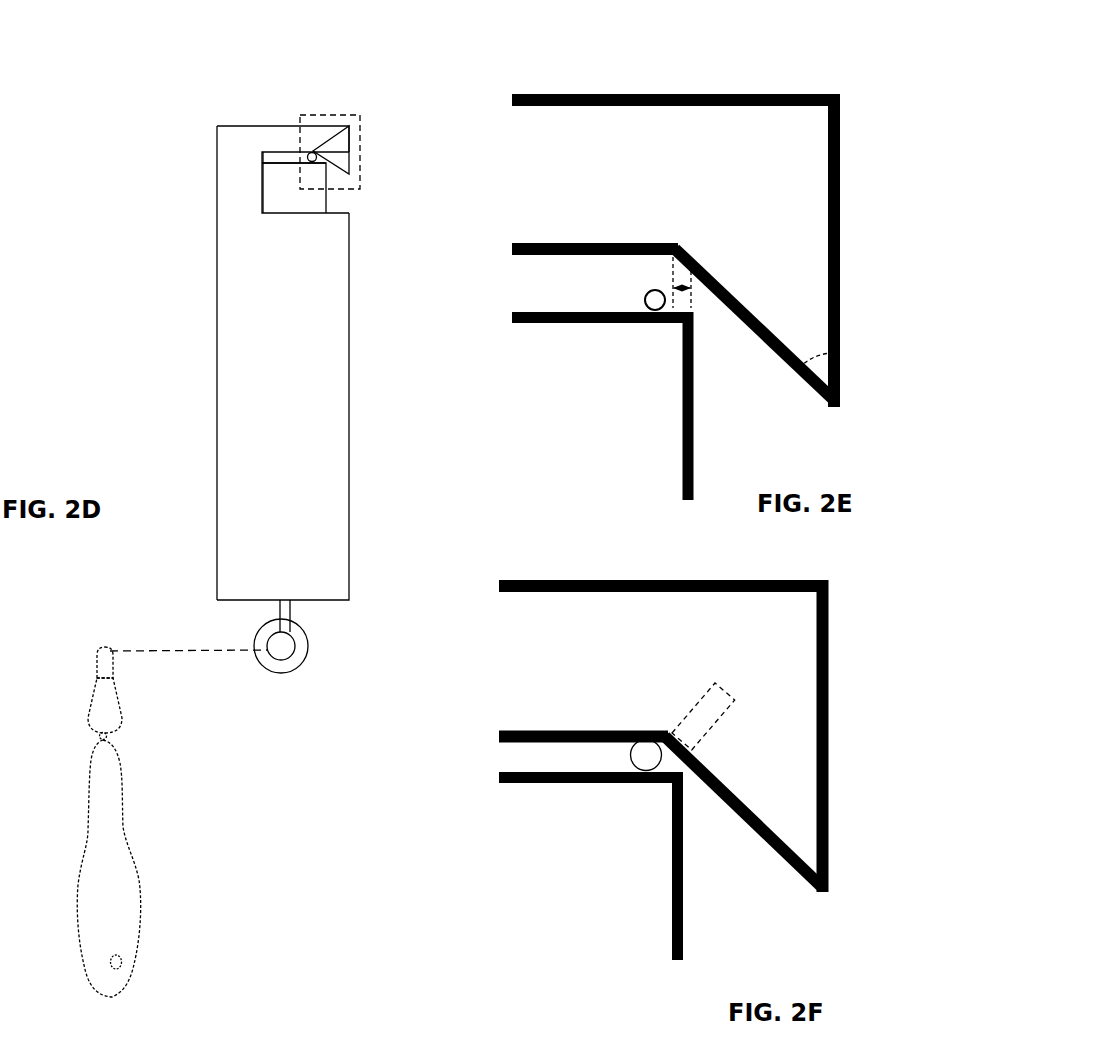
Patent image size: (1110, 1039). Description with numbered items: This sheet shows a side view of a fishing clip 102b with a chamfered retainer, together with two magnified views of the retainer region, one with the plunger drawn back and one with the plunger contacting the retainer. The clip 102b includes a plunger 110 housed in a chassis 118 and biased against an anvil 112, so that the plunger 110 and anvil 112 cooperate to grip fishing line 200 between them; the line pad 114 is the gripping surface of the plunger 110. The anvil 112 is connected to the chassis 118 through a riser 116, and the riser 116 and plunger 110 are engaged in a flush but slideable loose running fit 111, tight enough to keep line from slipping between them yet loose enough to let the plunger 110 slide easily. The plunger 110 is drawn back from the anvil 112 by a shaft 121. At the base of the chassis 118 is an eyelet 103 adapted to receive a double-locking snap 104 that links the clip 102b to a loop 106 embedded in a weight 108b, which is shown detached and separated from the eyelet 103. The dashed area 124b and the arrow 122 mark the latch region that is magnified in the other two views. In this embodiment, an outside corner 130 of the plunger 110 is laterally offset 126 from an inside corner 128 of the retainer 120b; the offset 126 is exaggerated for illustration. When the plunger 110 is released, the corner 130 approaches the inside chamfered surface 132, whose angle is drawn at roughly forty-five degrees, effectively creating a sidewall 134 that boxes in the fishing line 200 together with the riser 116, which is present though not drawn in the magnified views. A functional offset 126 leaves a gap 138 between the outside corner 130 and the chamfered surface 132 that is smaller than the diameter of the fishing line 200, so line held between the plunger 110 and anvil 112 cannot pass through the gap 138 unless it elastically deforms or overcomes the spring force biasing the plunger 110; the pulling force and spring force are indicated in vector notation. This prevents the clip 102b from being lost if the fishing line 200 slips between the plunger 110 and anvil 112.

In FIG. 2D, the clip 102b is at (182, 408).
In FIG. 2D, the eyelet 103 is at (298, 625).
In FIG. 2D, the double-locking snap 104 is at (115, 690).
In FIG. 2D, the loop 106 is at (113, 733).
In FIG. 2D, the weight 108b is at (91, 883).
In FIG. 2D, the plunger 110 is at (312, 198).
In FIG. 2E, the plunger 110 is at (519, 352).
In FIG. 2F, the plunger 110 is at (506, 811).
In FIG. 2D, the flush slideable loose running fit 111 is at (265, 192).
In FIG. 2D, the anvil 112 is at (290, 148).
In FIG. 2E, the anvil 112 is at (519, 234).
In FIG. 2F, the anvil 112 is at (508, 716).
In FIG. 2D, the line pad 114 is at (286, 161).
In FIG. 2D, the riser 116 is at (228, 192).
In FIG. 2D, the chassis 118 is at (264, 352).
In FIG. 2D, the retainer 120b is at (338, 150).
In FIG. 2E, the retainer 120b is at (773, 299).
In FIG. 2F, the retainer 120b is at (762, 789).
In FIG. 2D, the shaft 121 is at (280, 607).
In FIG. 2D, the latch assembly 122 is at (367, 188).
In FIG. 2F, the latch assembly 122 is at (828, 933).
In FIG. 2D, the latch region 124b is at (312, 117).
In FIG. 2E, the offset 126 is at (686, 280).
In FIG. 2E, the inside corner 128 is at (660, 261).
In FIG. 2E, the outside corner 130 is at (702, 321).
In FIG. 2F, the outside corner 130 is at (659, 783).
In FIG. 2E, the inside chamfered surface 132 is at (782, 353).
In FIG. 2F, the inside chamfered surface 132 is at (738, 810).
In FIG. 2F, the sidewall 134 is at (729, 692).
In FIG. 2F, the gap 138 is at (689, 782).
In FIG. 2D, the fishing line 200 is at (317, 154).
In FIG. 2E, the fishing line 200 is at (641, 321).
In FIG. 2F, the fishing line 200 is at (631, 753).